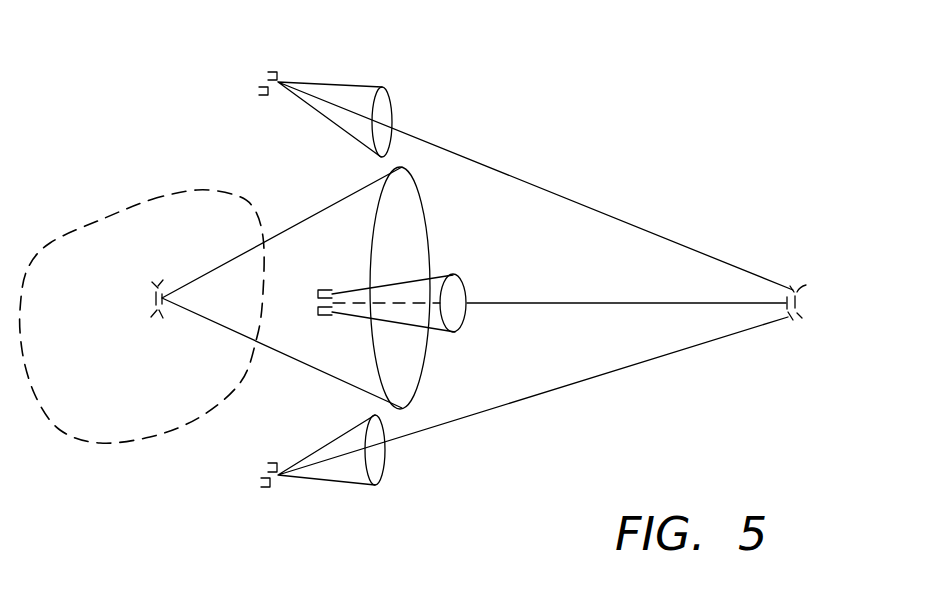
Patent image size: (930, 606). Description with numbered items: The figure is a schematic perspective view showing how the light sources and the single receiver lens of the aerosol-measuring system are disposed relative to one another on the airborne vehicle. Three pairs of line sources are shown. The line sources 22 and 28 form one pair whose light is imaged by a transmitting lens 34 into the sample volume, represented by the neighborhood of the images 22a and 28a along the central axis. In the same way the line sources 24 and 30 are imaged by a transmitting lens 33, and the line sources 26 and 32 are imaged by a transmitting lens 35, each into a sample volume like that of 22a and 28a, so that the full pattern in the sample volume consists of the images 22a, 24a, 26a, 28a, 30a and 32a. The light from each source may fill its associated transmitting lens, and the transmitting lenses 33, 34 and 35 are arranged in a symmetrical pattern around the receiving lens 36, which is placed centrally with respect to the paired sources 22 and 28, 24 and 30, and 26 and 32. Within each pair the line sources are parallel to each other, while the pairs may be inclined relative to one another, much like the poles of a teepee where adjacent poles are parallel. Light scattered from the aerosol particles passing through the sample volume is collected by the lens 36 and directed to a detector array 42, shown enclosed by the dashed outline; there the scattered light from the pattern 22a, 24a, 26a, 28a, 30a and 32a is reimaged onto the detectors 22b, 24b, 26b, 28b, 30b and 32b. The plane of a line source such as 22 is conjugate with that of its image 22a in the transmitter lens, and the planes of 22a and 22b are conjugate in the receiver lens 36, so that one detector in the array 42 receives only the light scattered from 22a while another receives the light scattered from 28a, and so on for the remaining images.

The line source 22 is at (323, 289).
The line source 24 is at (272, 70).
The line source 26 is at (268, 462).
The line source 28 is at (323, 317).
The line source 30 is at (264, 97).
The line source 32 is at (267, 489).
The transmitting lens 33 is at (392, 97).
The transmitting lens 34 is at (467, 283).
The transmitting lens 35 is at (377, 467).
The receiving lens 36 is at (422, 222).
The detector array 42 is at (100, 218).
The image of line source in sample volume 22a is at (785, 298).
The image of line source in sample volume 24a is at (804, 288).
The image of line source in sample volume 26a is at (801, 315).
The image of line source in sample volume 28a is at (800, 303).
The image of line source in sample volume 30a is at (792, 288).
The image of line source in sample volume 32a is at (789, 319).
The detector 22b is at (163, 305).
The detector 24b is at (152, 313).
The detector 26b is at (152, 284).
The detector 28b is at (155, 299).
The detector 30b is at (160, 320).
The detector 32b is at (160, 281).